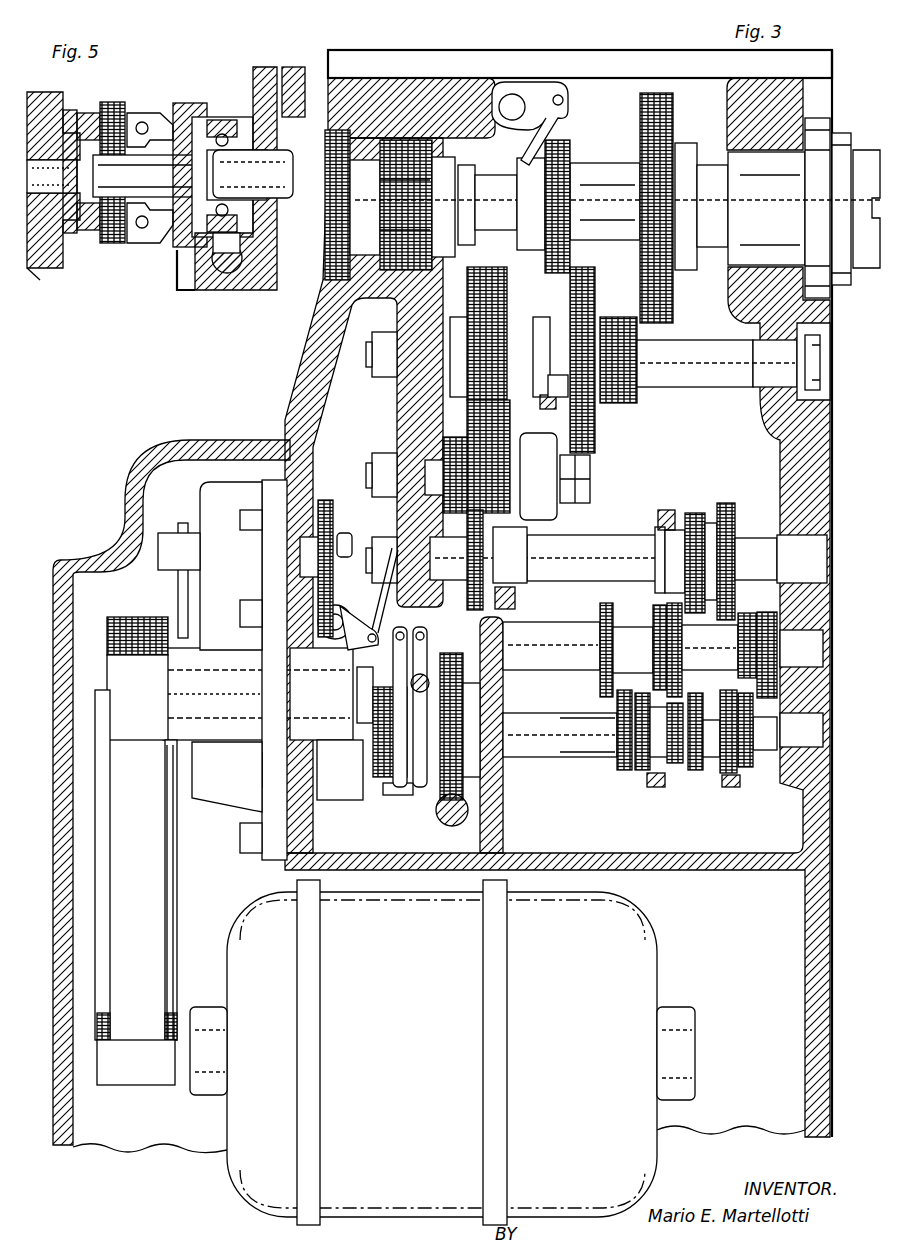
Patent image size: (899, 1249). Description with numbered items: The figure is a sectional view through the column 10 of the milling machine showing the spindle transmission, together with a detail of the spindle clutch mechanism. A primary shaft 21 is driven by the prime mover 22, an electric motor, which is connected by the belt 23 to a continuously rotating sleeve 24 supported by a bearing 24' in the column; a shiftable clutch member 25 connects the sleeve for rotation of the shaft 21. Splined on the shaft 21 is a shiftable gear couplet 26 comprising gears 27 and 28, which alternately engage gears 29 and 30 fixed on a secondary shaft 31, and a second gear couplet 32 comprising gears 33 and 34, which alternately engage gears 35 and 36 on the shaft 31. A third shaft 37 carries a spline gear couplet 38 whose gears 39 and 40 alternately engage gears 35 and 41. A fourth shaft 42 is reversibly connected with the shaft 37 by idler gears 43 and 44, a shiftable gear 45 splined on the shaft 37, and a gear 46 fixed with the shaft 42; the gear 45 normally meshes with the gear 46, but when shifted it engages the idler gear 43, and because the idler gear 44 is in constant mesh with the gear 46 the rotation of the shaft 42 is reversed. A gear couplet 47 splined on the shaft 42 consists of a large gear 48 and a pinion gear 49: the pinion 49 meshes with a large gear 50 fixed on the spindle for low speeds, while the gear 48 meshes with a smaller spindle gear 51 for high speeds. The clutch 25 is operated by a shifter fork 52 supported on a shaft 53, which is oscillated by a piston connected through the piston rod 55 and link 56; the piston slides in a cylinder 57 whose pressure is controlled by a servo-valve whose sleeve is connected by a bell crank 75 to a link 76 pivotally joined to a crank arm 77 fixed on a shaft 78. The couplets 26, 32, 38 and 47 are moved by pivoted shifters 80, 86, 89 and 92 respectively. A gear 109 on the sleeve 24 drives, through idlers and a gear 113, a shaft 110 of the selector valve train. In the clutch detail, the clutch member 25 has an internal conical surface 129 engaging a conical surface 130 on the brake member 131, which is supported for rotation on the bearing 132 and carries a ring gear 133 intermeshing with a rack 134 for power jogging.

In FIG. 3, the column 10 is at (292, 395).
In FIG. 5, the primary shaft 21 is at (285, 200).
In FIG. 3, the primary shaft 21 is at (545, 758).
In FIG. 3, the prime mover 22 is at (660, 962).
In FIG. 3, the belt 23 is at (176, 885).
In FIG. 5, the sleeve 24 is at (97, 152).
In FIG. 3, the sleeve 24 is at (131, 830).
In FIG. 5, the bearing 24' is at (33, 286).
In FIG. 5, the shiftable clutch member 25 is at (183, 245).
In FIG. 3, the shiftable clutch member 25 is at (395, 797).
In FIG. 3, the shiftable gear couplet 26 is at (675, 765).
In FIG. 3, the gear 27 is at (622, 770).
In FIG. 3, the gear 28 is at (642, 772).
In FIG. 3, the gear 29 is at (600, 610).
In FIG. 3, the gear 30 is at (655, 612).
In FIG. 3, the secondary shaft 31 is at (540, 635).
In FIG. 3, the second gear couplet 32 is at (712, 760).
In FIG. 3, the gear 33 is at (695, 772).
In FIG. 3, the gear 34 is at (746, 770).
In FIG. 3, the gear 35 is at (690, 660).
In FIG. 3, the gear 36 is at (768, 603).
In FIG. 3, the third shaft 37 is at (605, 540).
In FIG. 3, the spline gear couplet 38 is at (655, 537).
In FIG. 3, the gear 39 is at (692, 513).
In FIG. 3, the gear 40 is at (730, 505).
In FIG. 3, the gear 41 is at (740, 650).
In FIG. 3, the fourth shaft 42 is at (705, 372).
In FIG. 3, the idler gear 43 is at (440, 435).
In FIG. 3, the idler gear 44 is at (528, 478).
In FIG. 3, the shiftable gear 45 is at (470, 598).
In FIG. 3, the gear 46 is at (505, 405).
In FIG. 3, the gear couplet 47 is at (572, 315).
In FIG. 3, the large gear 48 is at (598, 440).
In FIG. 3, the pinion gear 49 is at (628, 404).
In FIG. 3, the large gear 50 is at (675, 302).
In FIG. 3, the smaller gear 51 is at (575, 158).
In FIG. 3, the shifter fork 52 is at (420, 780).
In FIG. 3, the shaft 53 is at (428, 675).
In FIG. 3, the piston rod 55 is at (358, 790).
In FIG. 3, the link 56 is at (425, 625).
In FIG. 3, the cylinder 57 is at (222, 712).
In FIG. 3, the bell crank 75 is at (372, 625).
In FIG. 3, the link 76 is at (380, 595).
In FIG. 3, the crank arm 77 is at (545, 98).
In FIG. 3, the shaft 78 is at (512, 94).
In FIG. 3, the pivoted shifter 80 is at (655, 788).
In FIG. 3, the pivot shifter 86 is at (735, 788).
In FIG. 3, the pivoted shifter 89 is at (676, 510).
In FIG. 3, the pivoted shifter 92 is at (598, 412).
In FIG. 5, the gear 109 is at (78, 240).
In FIG. 3, the shaft 110 is at (345, 548).
In FIG. 3, the gear 113 is at (328, 520).
In FIG. 5, the internal conical surface 129 is at (190, 268).
In FIG. 5, the conical surface 130 is at (207, 118).
In FIG. 5, the brake member 131 is at (228, 120).
In FIG. 5, the bearing 132 is at (280, 120).
In FIG. 5, the ring gear 133 is at (228, 273).
In FIG. 5, the rack 134 is at (220, 253).